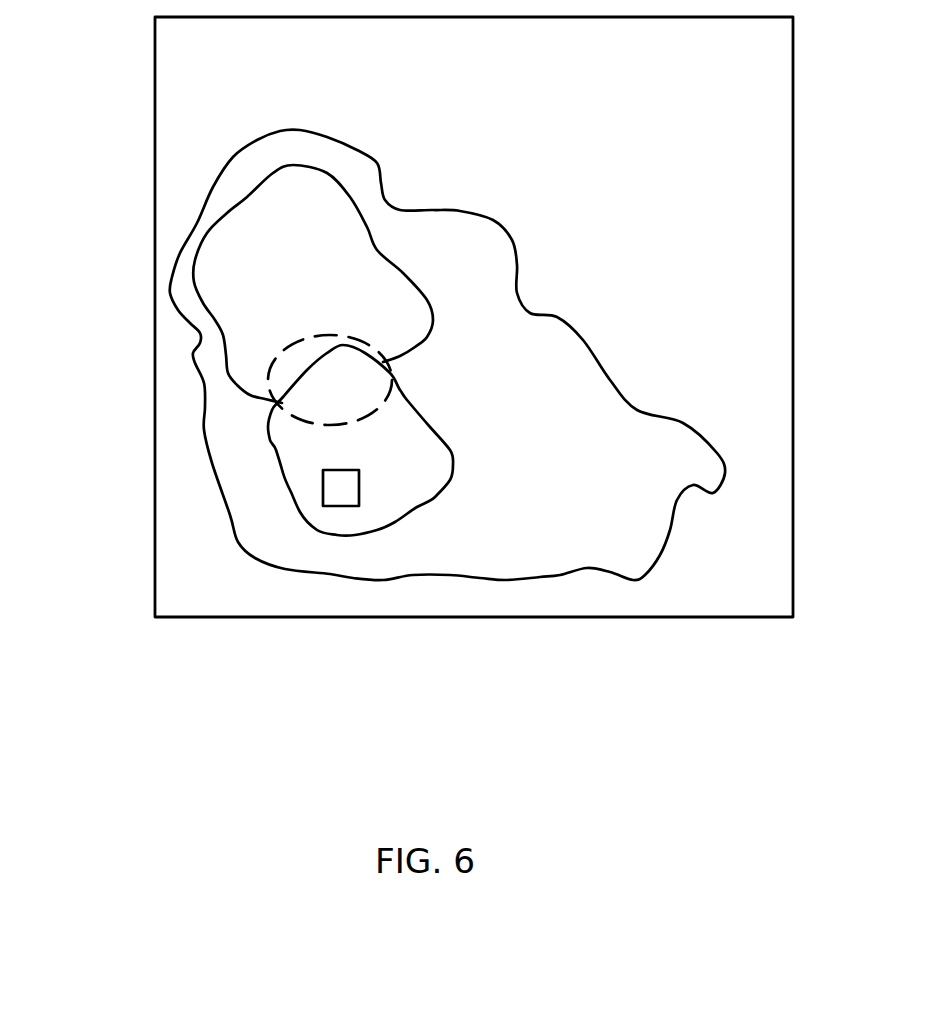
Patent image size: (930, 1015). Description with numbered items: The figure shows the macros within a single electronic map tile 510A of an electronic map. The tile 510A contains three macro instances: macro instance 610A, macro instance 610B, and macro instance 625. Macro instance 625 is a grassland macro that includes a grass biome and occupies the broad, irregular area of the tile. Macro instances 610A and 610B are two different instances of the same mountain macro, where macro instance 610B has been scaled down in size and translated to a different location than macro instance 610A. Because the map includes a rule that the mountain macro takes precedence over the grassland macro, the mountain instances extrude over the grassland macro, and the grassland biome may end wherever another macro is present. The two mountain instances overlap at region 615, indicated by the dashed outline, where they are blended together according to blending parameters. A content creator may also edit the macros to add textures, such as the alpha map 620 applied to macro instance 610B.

The electronic map tile 510A is at (228, 56).
The macro instance 610A is at (200, 247).
The region 615 is at (278, 360).
The macro instance 610B is at (268, 438).
The alpha map 620 is at (323, 487).
The macro instance 625 is at (323, 553).